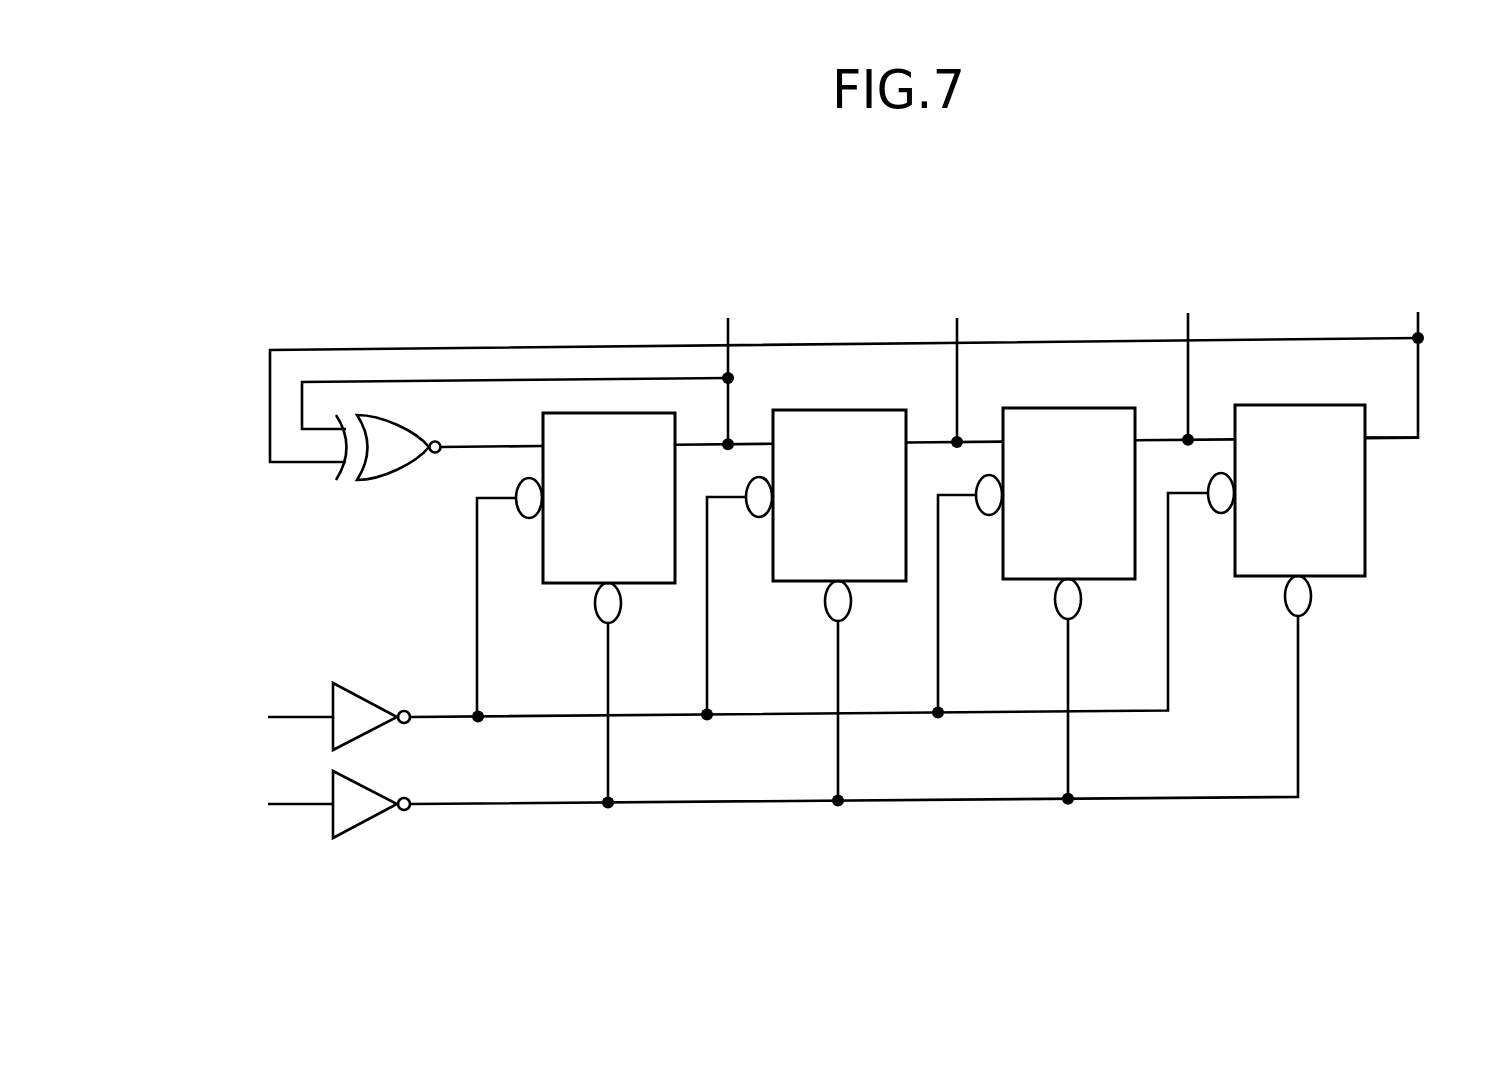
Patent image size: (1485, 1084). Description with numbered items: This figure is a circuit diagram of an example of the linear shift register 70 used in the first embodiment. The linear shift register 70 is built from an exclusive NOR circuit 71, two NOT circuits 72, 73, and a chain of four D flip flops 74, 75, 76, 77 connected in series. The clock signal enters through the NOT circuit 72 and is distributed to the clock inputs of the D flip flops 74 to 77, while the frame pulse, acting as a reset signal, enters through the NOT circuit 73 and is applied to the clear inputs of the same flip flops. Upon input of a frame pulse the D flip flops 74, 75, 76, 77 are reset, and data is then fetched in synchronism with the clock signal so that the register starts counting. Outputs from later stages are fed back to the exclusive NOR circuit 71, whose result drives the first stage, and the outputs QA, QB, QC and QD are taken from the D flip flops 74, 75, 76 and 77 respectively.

The linear shift register 70 is at (444, 260).
The E NOR circuit 71 is at (398, 468).
The NOT circuit 72 is at (355, 703).
The NOT circuit 73 is at (352, 818).
The D flip flop 74 is at (583, 425).
The D flip flop 75 is at (832, 415).
The D flip flop 76 is at (1063, 412).
The D flip flop 77 is at (1293, 410).